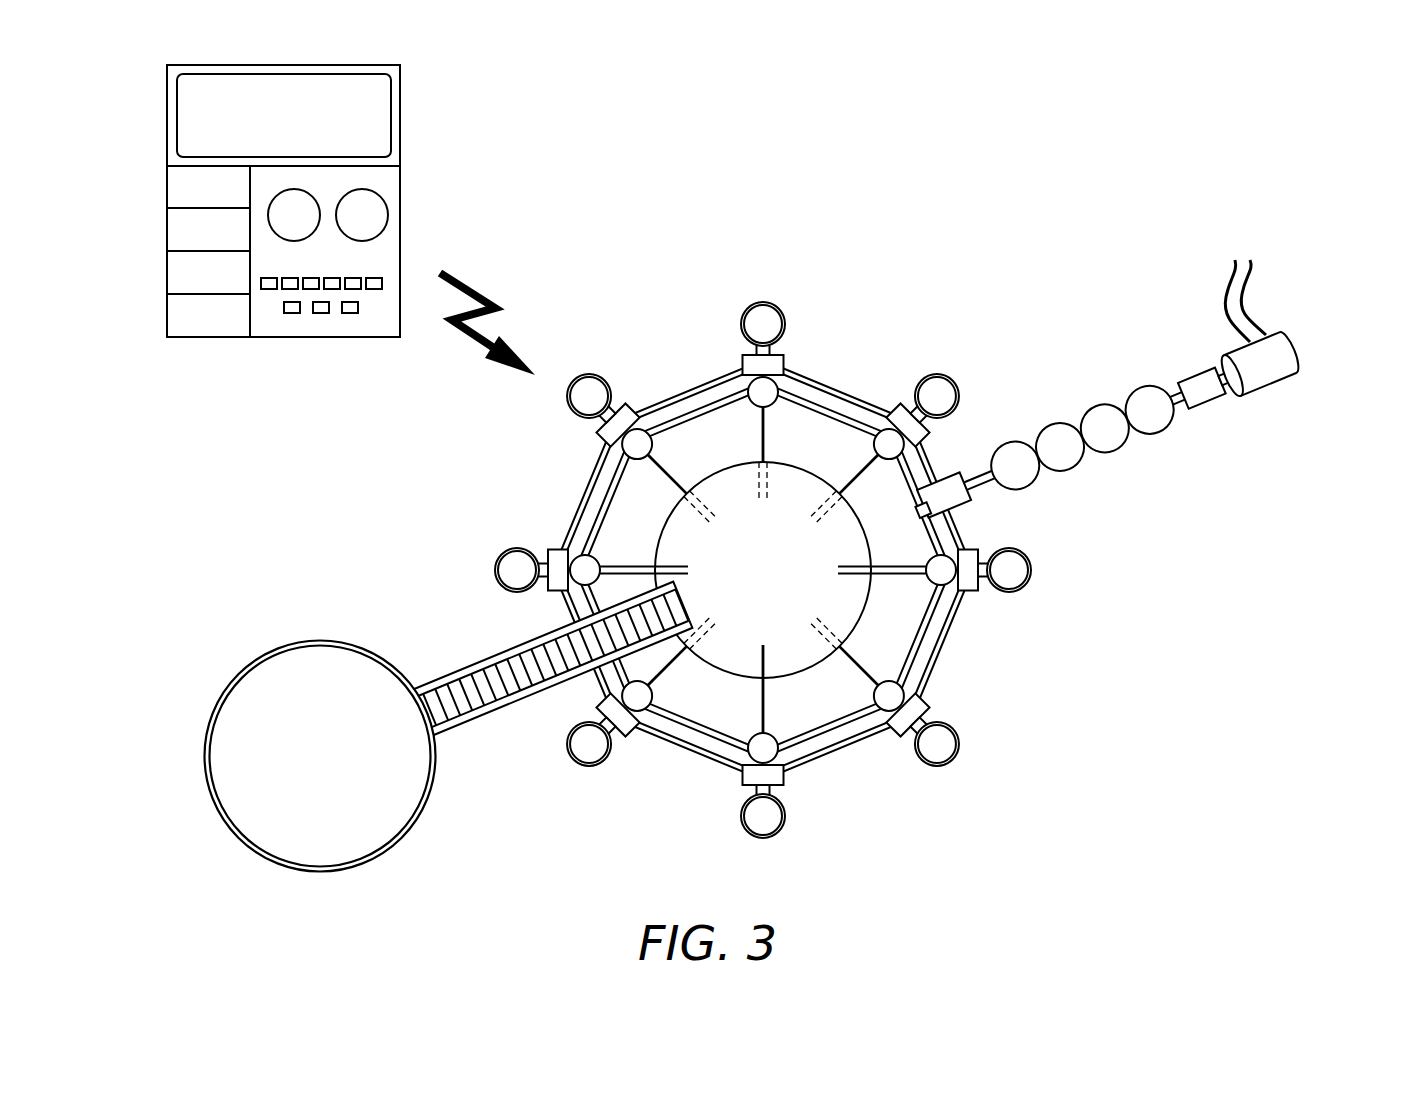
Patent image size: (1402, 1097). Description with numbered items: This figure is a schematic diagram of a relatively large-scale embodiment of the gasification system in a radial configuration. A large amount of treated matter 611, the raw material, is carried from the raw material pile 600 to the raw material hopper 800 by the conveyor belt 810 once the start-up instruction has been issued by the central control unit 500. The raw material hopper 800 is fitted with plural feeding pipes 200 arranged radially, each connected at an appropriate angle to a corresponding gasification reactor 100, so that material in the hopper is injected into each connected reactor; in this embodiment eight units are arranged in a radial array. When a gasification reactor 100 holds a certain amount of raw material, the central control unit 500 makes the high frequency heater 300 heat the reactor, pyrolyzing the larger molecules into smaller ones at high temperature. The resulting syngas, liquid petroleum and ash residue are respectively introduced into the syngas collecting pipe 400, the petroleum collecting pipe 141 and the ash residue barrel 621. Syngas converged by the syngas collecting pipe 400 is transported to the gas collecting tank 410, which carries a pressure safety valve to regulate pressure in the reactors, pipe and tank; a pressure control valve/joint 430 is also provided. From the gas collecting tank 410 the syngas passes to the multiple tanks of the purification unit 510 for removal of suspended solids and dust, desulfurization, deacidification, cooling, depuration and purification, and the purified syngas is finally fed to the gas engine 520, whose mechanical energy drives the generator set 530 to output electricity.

The gasification reactor 100 is at (798, 727).
The petroleum collecting pipe 141 is at (787, 840).
The feeding pipe 200 is at (876, 660).
The high frequency heater 300 is at (342, 328).
The syngas collecting pipe 400 is at (963, 615).
The gas collecting tank 410 is at (970, 508).
The pressure control valve/joint 430 is at (930, 738).
The central control unit 500 is at (218, 322).
The purification unit 510 is at (1143, 397).
The gas engine 520 is at (1213, 393).
The generator set 530 is at (1285, 373).
The raw material pile 600 is at (263, 655).
The treated matter 611 is at (322, 657).
The ash residue barrel 621 is at (937, 775).
The raw material hopper 800 is at (808, 468).
The conveyor belt 810 is at (497, 697).